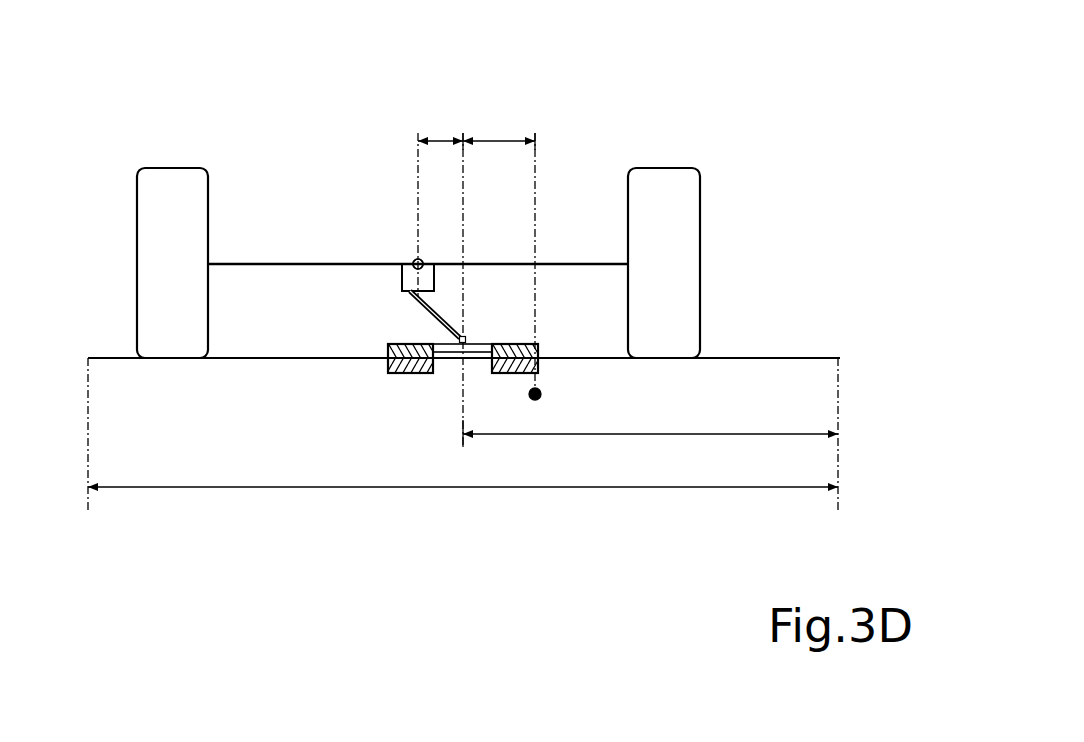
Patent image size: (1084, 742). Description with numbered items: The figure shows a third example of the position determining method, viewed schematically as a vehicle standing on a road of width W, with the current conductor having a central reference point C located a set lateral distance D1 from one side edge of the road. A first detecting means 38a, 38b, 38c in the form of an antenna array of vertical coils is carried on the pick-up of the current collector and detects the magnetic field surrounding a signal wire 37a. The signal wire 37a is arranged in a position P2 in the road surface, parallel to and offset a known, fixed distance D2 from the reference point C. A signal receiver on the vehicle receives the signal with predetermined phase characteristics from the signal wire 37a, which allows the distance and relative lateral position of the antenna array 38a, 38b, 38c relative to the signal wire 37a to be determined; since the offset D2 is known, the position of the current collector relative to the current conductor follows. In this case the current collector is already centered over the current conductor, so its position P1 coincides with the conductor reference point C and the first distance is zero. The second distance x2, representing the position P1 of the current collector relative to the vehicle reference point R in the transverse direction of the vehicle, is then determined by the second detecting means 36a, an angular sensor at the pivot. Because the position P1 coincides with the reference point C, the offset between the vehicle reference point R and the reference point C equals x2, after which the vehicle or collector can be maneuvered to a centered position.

The second detecting means 36a is at (413, 258).
The vehicle reference point R is at (418, 264).
The first detecting means 38c is at (389, 342).
The first detecting means 38b is at (537, 344).
The first detecting means 38a is at (465, 339).
The signal wire 37a is at (535, 401).
The second distance x2 is at (440, 124).
The fixed distance D2 is at (499, 125).
The set lateral distance D1 is at (650, 422).
The road width W is at (463, 474).
The position of the current collector P1 is at (467, 132).
The position of the signal wire P2 is at (539, 132).
The central reference point C is at (457, 427).